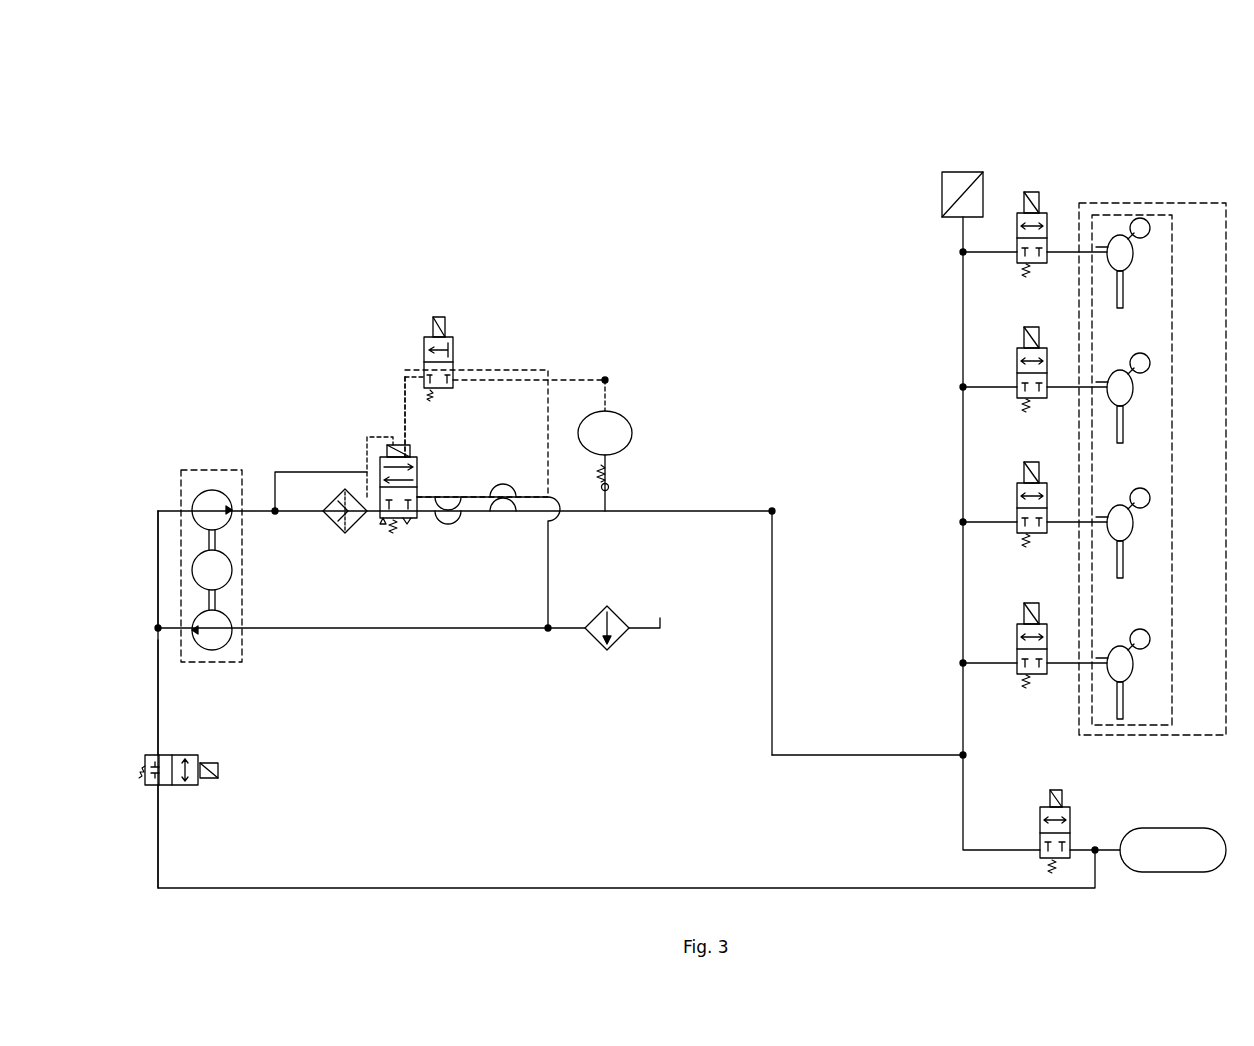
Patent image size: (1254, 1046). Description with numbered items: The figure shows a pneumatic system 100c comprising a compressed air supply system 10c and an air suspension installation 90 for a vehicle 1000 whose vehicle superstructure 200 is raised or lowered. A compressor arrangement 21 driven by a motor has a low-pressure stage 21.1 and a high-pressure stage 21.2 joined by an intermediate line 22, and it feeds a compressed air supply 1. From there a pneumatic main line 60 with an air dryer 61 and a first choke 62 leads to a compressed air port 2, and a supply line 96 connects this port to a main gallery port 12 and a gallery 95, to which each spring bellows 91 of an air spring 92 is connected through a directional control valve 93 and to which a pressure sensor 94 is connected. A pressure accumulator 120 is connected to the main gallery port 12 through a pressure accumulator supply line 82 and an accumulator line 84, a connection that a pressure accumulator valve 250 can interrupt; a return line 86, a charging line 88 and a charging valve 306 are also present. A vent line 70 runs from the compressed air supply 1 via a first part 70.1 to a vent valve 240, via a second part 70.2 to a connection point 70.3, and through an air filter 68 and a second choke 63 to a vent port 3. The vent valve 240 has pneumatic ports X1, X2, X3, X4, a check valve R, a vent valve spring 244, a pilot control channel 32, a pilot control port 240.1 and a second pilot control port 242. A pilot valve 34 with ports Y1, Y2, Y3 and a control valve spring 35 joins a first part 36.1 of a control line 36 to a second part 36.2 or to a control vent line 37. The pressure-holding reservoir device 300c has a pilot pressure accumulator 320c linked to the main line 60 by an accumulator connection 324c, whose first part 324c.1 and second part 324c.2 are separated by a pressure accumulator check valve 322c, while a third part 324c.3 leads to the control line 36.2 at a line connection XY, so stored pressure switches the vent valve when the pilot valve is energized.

The pneumatic system 100c is at (893, 62).
The air suspension installation 90 is at (1132, 108).
The pressure sensor 94 is at (963, 172).
The directional control valve 93 is at (1031, 192).
The vehicle superstructure 200 is at (1128, 215).
The vehicle 1000 is at (1188, 205).
The spring bellows 91 is at (1135, 257).
The air spring 92 is at (1152, 274).
The compressed air supply system 10c is at (510, 285).
The first part of control line 36.1 is at (405, 375).
The pilot valve 34 is at (427, 337).
The control line 36 is at (568, 368).
The second part of control line 36.2 is at (583, 380).
The control vent line 37 is at (503, 370).
The second pilot valve port Y2 is at (424, 372).
The third pilot valve port Y3 is at (454, 366).
The first pilot valve port Y1 is at (454, 385).
The control valve spring 35 is at (448, 393).
The line connection XY is at (605, 380).
The pressure-holding pneumatic reservoir device 300c is at (685, 353).
The third part of accumulator connection 324c.3 is at (610, 400).
The pilot pressure accumulator 320c is at (620, 440).
The second part of accumulator connection 324c.2 is at (608, 465).
The pressure accumulator check valve 322c is at (608, 480).
The accumulator connection 324c is at (622, 485).
The first part of accumulator connection 324c.1 is at (608, 499).
The compressed air port 2 is at (774, 508).
The vent valve 240 is at (380, 457).
The pilot control port of vent valve 240.1 is at (359, 418).
The second pilot control port of vent valve 242 is at (365, 440).
The third pneumatic port of vent valve X3 is at (367, 470).
The fourth pneumatic port of vent valve X4 is at (424, 491).
The second pneumatic port of vent valve X2 is at (385, 527).
The first pneumatic port of vent valve X1 is at (425, 527).
The pilot control channel 32 is at (415, 405).
The vent valve spring 244 is at (397, 527).
The check valve of vent valve R is at (405, 528).
The first choke 62 is at (445, 522).
The second choke 63 is at (503, 487).
The high-pressure stage 21.2 is at (212, 490).
The compressed air supply 1 is at (262, 503).
The compressor arrangement 21 is at (238, 663).
The low-pressure stage 21.1 is at (213, 651).
The intermediate line 22 is at (157, 562).
The first part of vent line 70.1 is at (274, 495).
The vent line 70 is at (562, 552).
The second part of vent line 70.2 is at (549, 600).
The connection point 70.3 is at (546, 632).
The pneumatic main line 60 is at (354, 520).
The air dryer 61 is at (338, 522).
The air filter 68 is at (603, 640).
The vent port 3 is at (660, 627).
The supply line 96 is at (773, 578).
The gallery 95 is at (962, 580).
The main gallery port 12 is at (965, 753).
The pressure accumulator valve 250 is at (1055, 790).
The accumulator line 84 is at (1102, 848).
The pressure accumulator 120 is at (1160, 828).
The pressure accumulator supply line 82 is at (962, 850).
The return line 86 is at (808, 886).
The charging line 88 is at (157, 656).
The charging valve 306 is at (145, 758).